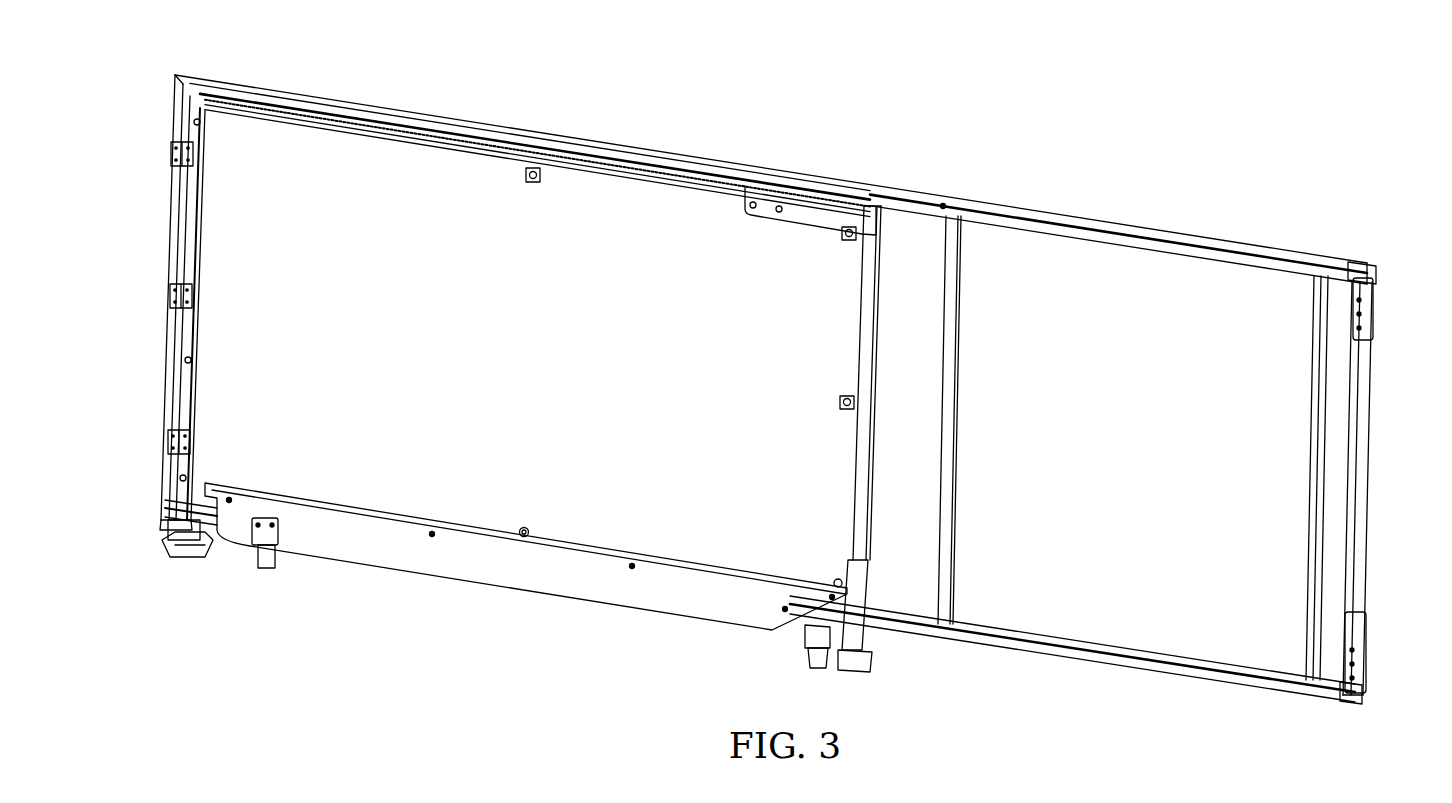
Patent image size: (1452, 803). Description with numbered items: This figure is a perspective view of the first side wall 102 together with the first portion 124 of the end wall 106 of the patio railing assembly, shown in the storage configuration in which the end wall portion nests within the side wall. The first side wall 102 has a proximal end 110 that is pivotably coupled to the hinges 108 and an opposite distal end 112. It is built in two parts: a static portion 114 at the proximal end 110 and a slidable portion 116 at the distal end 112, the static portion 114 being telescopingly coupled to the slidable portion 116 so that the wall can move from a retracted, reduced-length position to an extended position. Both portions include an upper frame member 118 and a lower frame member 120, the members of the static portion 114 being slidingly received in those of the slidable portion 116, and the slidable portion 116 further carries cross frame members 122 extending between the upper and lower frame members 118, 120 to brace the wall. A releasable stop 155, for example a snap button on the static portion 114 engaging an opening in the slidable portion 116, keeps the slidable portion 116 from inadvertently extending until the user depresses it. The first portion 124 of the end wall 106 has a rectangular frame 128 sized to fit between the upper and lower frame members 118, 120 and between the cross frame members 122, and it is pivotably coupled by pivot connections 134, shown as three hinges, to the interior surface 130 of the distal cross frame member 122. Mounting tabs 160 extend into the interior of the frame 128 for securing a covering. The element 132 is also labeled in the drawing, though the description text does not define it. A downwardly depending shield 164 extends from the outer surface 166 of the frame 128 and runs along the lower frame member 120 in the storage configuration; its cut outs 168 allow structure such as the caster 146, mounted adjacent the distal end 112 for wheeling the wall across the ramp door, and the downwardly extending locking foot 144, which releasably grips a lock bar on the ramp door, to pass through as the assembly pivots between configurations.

The first side wall 102 is at (990, 196).
The end wall 106 is at (596, 164).
The hinges 108 is at (1375, 295).
The proximal end 110 is at (1340, 702).
The distal end 112 is at (169, 240).
The static portion 114 is at (1360, 266).
The slidable portion 116 is at (1071, 220).
The upper frame member 118 is at (706, 170).
The lower frame member 120 is at (955, 641).
The cross frame members 122 is at (171, 205).
The first portion of end wall 124 is at (308, 116).
The rectangular frame 128 is at (389, 128).
The interior surface 130 is at (1136, 246).
The bottom rail 132 is at (1140, 660).
The pivot connections 134 is at (170, 151).
The locking foot 144 is at (166, 540).
The caster 146 is at (263, 569).
The releasable stop 155 is at (942, 204).
The mounting tabs 160 is at (534, 180).
The shield 164 is at (510, 576).
The outer surface 166 is at (218, 542).
The cut outs 168 is at (283, 548).